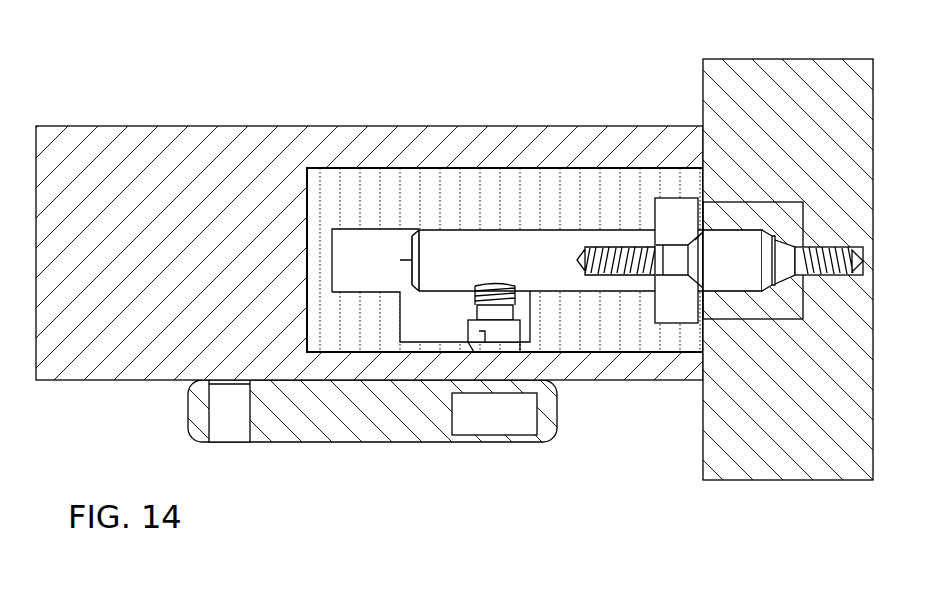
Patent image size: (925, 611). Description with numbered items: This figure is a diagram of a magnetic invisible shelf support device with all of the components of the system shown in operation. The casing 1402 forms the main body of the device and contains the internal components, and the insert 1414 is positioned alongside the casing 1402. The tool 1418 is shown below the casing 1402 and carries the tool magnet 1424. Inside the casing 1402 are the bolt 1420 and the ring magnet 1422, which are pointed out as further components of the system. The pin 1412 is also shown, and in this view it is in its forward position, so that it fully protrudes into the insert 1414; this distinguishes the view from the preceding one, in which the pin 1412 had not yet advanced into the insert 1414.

The casing 1402 is at (440, 184).
The pin 1412 is at (732, 275).
The insert 1414 is at (753, 212).
The tool 1418 is at (347, 443).
The bolt 1420 is at (509, 331).
The ring magnet 1422 is at (674, 220).
The tool magnet 1424 is at (483, 420).